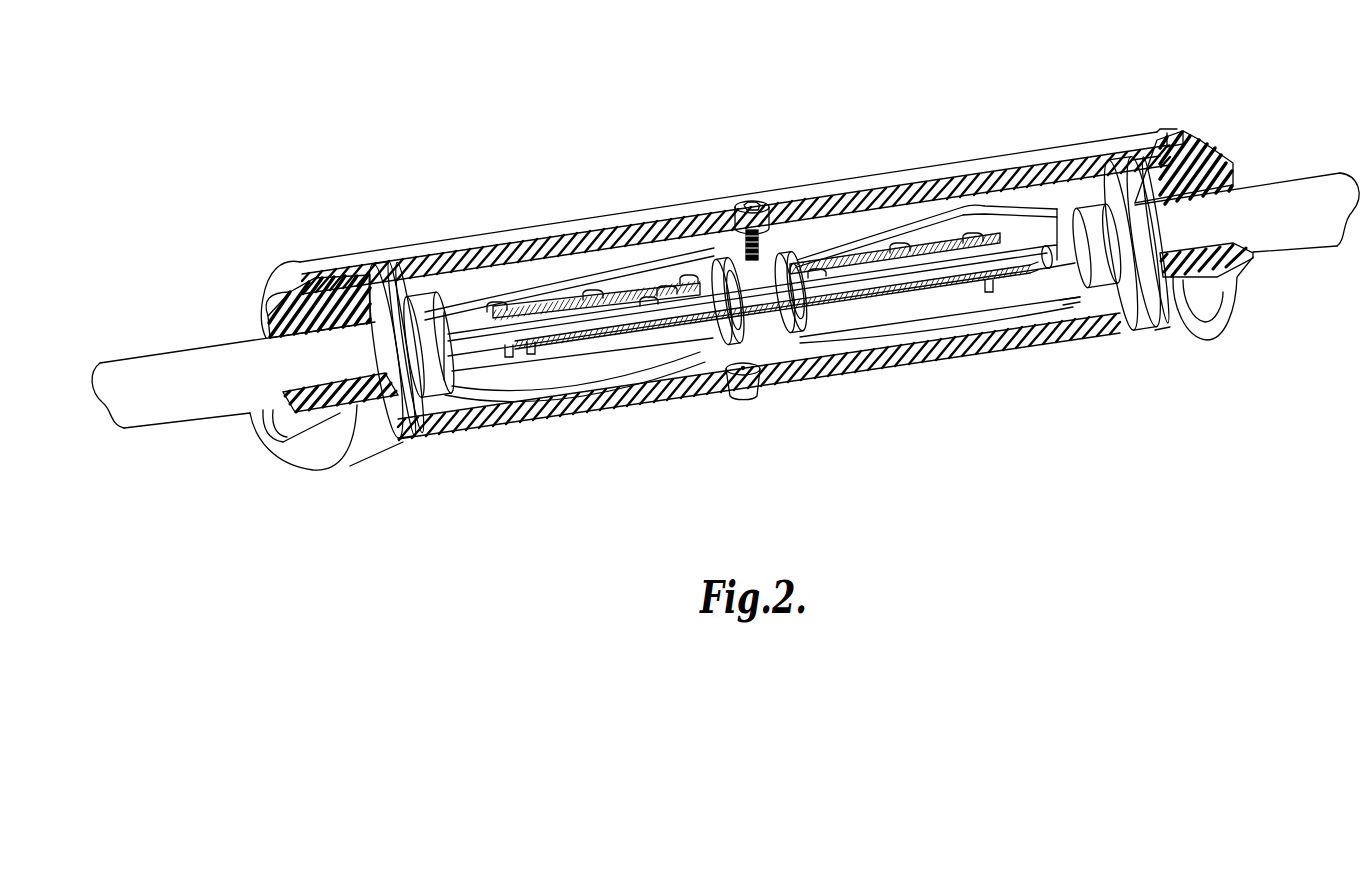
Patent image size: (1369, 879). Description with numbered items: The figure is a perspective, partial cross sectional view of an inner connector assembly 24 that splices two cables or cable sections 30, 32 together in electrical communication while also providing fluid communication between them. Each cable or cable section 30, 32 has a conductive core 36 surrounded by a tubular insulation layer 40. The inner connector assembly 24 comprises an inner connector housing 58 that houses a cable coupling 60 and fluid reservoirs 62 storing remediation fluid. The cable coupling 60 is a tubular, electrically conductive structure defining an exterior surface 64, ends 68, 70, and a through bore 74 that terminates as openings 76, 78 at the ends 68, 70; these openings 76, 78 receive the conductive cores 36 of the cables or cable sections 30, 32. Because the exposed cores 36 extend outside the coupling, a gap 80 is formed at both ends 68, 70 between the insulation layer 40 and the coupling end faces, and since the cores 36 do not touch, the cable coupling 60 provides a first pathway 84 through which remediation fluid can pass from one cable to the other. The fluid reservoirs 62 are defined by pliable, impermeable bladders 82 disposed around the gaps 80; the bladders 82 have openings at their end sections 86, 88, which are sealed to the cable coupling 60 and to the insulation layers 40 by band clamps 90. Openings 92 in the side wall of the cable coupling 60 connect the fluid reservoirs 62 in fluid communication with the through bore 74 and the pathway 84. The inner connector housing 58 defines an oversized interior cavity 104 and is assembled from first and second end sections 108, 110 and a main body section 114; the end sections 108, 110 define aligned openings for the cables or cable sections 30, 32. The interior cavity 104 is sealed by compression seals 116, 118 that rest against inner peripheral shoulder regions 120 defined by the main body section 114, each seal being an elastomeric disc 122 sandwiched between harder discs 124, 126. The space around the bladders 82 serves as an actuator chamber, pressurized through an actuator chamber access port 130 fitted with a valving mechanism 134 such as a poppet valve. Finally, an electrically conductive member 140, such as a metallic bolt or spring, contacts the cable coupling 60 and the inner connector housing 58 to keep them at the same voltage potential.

The inner connector assembly 24 is at (238, 208).
The cable or cable section 30 is at (146, 346).
The cable or cable section 32 is at (1339, 168).
The conductive core 36 is at (625, 322).
The insulation layer 40 is at (220, 358).
The inner connector housing 58 is at (305, 250).
The cable coupling 60 is at (897, 240).
The fluid reservoir 62 is at (594, 282).
The exterior surface 64 is at (549, 305).
The end 68 is at (508, 300).
The end 70 is at (1000, 228).
The through bore 74 is at (688, 272).
The opening 76 is at (548, 354).
The opening 78 is at (1031, 296).
The gap 80 is at (469, 314).
The bladder 82 is at (588, 385).
The first pathway 84 is at (803, 327).
The end section 86 is at (690, 347).
The end section 88 is at (448, 382).
The band clamp 90 is at (716, 288).
The opening 92 is at (644, 296).
The interior cavity 104 is at (1073, 302).
The first end section 108 is at (306, 446).
The second end section 110 is at (1213, 147).
The main body section 114 is at (1128, 139).
The compression seal 116 is at (358, 306).
The compression seal 118 is at (1152, 180).
The inner peripheral shoulder region 120 is at (402, 276).
The elastomeric disc 122 is at (1150, 325).
The disc 124 is at (1120, 330).
The disc 126 is at (1195, 340).
The actuator chamber access port 130 is at (758, 386).
The valving mechanism 134 is at (740, 398).
The electrically conductive member 140 is at (748, 203).